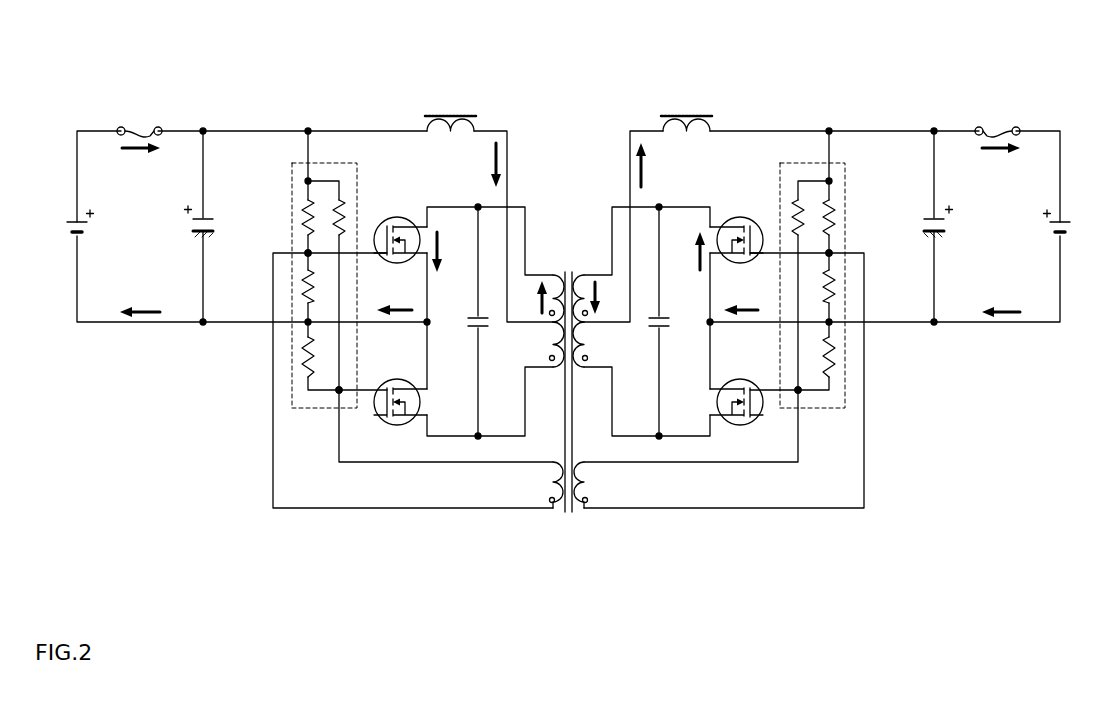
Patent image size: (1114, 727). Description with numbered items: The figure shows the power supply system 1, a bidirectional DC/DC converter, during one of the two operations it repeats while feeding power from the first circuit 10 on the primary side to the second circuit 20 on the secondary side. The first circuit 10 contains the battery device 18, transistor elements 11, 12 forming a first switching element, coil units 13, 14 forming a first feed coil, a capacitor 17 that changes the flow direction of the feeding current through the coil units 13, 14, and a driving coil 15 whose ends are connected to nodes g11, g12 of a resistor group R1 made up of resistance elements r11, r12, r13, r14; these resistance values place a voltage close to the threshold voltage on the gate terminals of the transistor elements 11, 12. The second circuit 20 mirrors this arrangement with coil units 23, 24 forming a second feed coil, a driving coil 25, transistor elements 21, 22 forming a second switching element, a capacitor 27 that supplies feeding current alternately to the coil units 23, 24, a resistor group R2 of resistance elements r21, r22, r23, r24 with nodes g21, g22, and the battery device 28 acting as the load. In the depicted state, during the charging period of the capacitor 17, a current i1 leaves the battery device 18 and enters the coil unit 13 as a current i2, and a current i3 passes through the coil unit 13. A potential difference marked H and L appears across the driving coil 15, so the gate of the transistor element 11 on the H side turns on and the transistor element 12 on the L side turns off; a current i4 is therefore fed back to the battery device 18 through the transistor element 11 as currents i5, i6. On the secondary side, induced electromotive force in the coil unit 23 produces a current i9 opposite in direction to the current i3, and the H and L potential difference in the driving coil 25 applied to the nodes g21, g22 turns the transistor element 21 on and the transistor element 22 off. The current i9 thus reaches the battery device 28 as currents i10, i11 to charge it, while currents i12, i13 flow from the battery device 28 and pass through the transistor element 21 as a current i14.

The power supply system 1 is at (850, 28).
The first circuit 10 is at (89, 103).
The second circuit 20 is at (1048, 103).
The battery device 18 is at (76, 233).
The battery device 28 is at (1061, 233).
The transistor element 11 is at (401, 217).
The transistor element 12 is at (401, 379).
The transistor element 21 is at (736, 217).
The transistor element 22 is at (736, 379).
The coil unit 13 is at (553, 272).
The coil unit 14 is at (553, 368).
The driving coil 15 is at (552, 506).
The coil unit 23 is at (584, 272).
The coil unit 24 is at (584, 368).
The driving coil 25 is at (585, 506).
The capacitor 17 is at (478, 315).
The capacitor 27 is at (659, 315).
The resistance element r11 is at (304, 214).
The resistance element r12 is at (304, 287).
The resistance element r13 is at (304, 352).
The resistance element r14 is at (343, 214).
The resistance element r21 is at (833, 214).
The resistance element r22 is at (833, 287).
The resistance element r23 is at (833, 352).
The resistance element r24 is at (794, 214).
The node g11 is at (306, 252).
The node g12 is at (340, 393).
The node g21 is at (831, 252).
The node g22 is at (797, 393).
The resistor group R1 is at (321, 409).
The resistor group R2 is at (816, 409).
The low potential side L is at (568, 452).
The high potential side H is at (568, 520).
The current i1 is at (142, 154).
The current i2 is at (490, 162).
The current i3 is at (540, 317).
The current i4 is at (438, 230).
The current i5 is at (398, 307).
The current i6 is at (134, 307).
The current i9 is at (599, 317).
The current i10 is at (648, 165).
The current i11 is at (1003, 154).
The current i12 is at (995, 307).
The current i13 is at (746, 307).
The current i14 is at (699, 232).